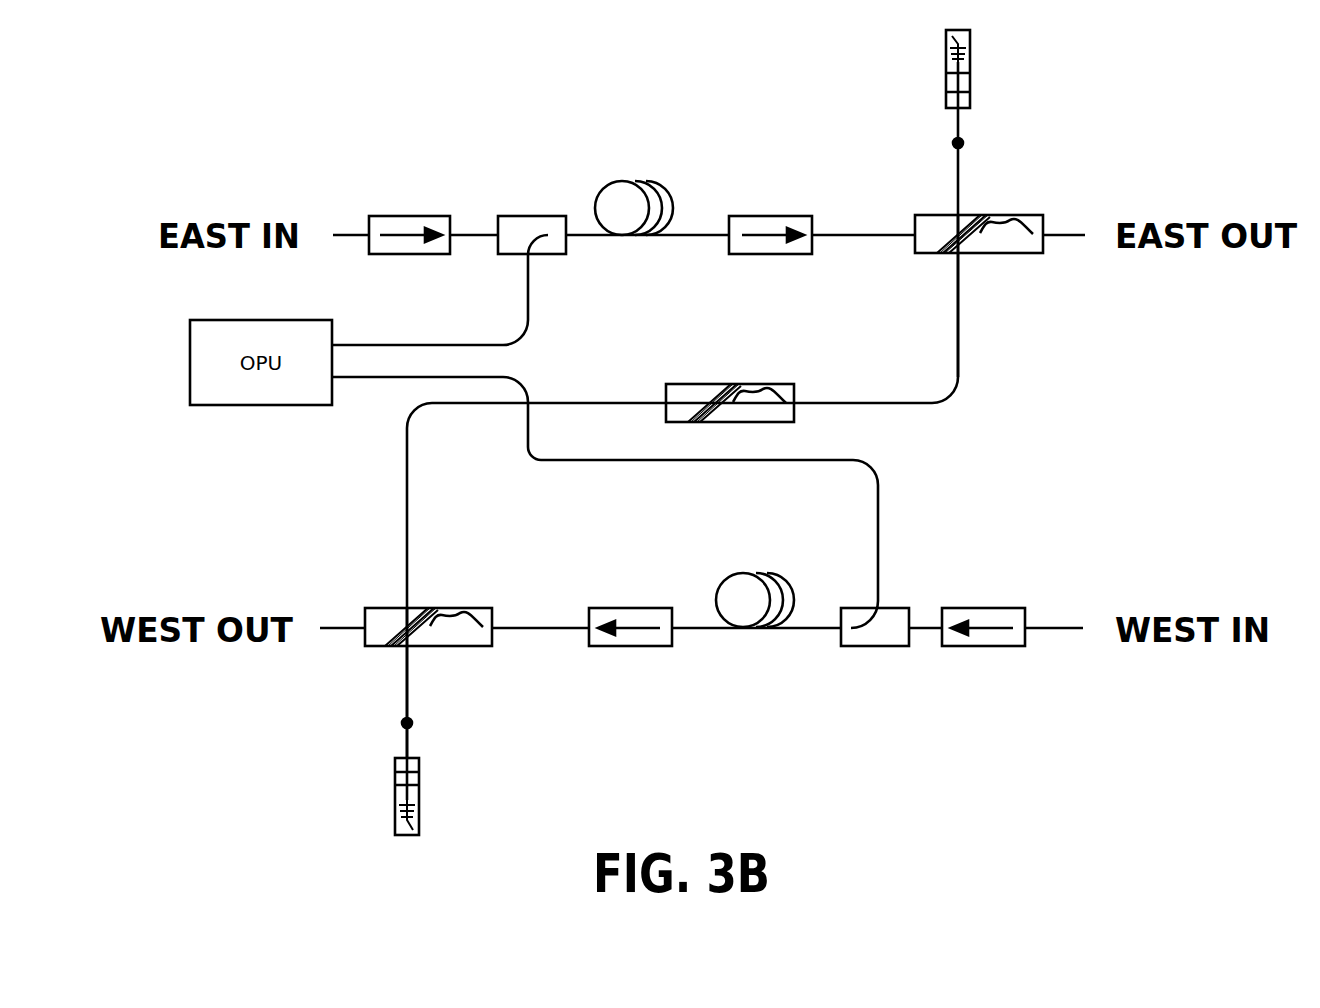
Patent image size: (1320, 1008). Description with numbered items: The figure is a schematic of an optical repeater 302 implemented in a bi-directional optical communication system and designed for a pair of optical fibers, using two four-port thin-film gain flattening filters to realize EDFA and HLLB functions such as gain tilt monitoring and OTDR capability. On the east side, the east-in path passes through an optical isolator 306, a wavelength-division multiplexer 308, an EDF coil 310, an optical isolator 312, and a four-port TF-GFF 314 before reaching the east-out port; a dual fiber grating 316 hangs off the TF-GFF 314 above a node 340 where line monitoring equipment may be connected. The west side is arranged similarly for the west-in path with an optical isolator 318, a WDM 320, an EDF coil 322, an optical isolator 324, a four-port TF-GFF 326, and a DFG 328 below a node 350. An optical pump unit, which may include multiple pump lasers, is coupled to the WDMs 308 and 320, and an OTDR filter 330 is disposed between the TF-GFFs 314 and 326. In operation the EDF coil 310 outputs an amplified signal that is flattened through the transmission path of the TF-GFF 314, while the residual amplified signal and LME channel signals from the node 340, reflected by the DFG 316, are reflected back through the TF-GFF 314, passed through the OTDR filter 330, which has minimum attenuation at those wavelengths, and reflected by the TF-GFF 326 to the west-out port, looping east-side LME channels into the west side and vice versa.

The optical repeater 302 is at (657, 830).
The optical isolator 306 is at (409, 263).
The wavelength-division multiplexer 308 is at (532, 211).
The EDF coil 310 is at (633, 181).
The optical isolator 312 is at (770, 263).
The 4-port TF-GFF 314 is at (1001, 264).
The dual fiber grating 316 is at (1005, 69).
The optical isolator 318 is at (983, 653).
The WDM 320 is at (875, 650).
The EDF coil 322 is at (755, 573).
The optical isolator 324 is at (630, 655).
The 4-port TF-GFF 326 is at (449, 655).
The DFG 328 is at (358, 796).
The OTDR filter 330 is at (731, 416).
The node 340 is at (932, 146).
The node 350 is at (384, 702).